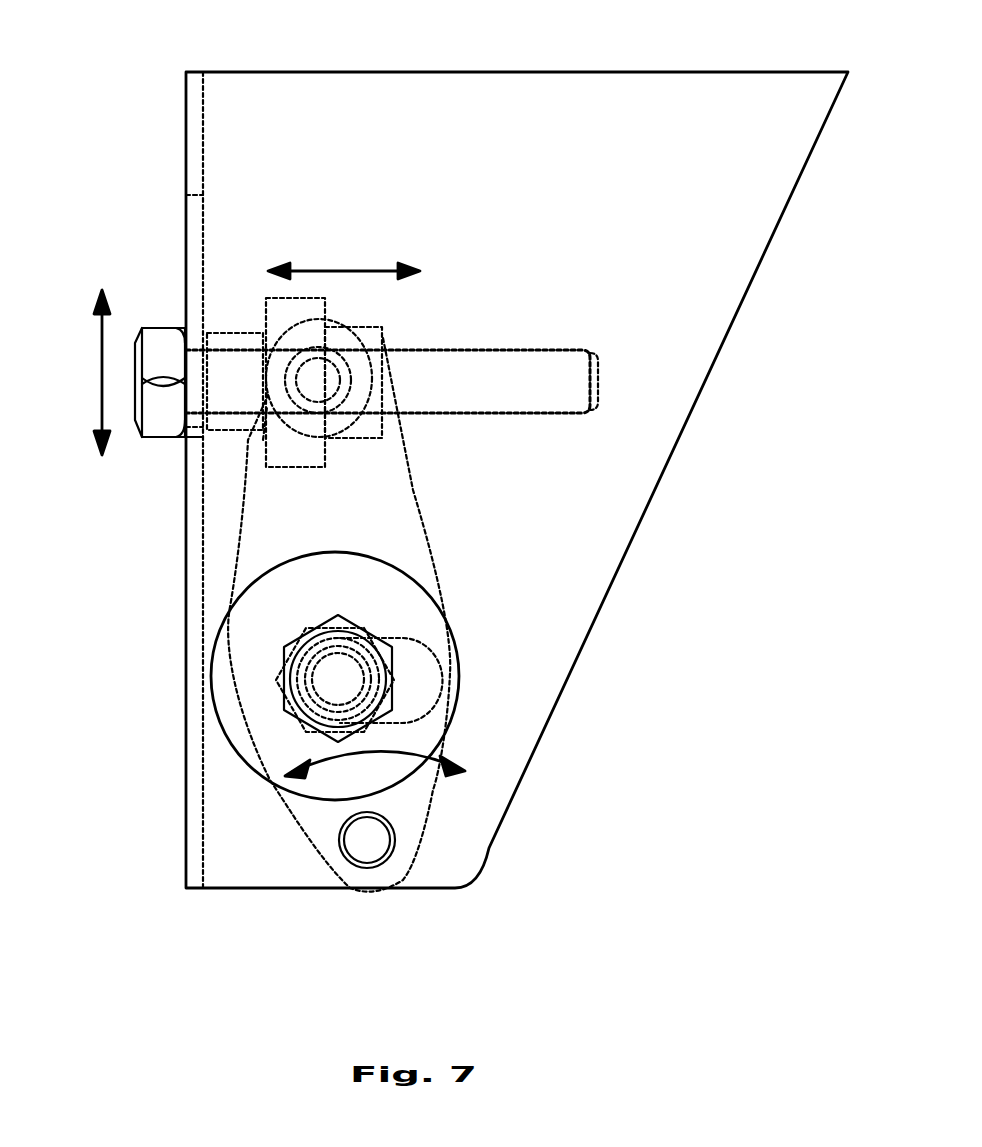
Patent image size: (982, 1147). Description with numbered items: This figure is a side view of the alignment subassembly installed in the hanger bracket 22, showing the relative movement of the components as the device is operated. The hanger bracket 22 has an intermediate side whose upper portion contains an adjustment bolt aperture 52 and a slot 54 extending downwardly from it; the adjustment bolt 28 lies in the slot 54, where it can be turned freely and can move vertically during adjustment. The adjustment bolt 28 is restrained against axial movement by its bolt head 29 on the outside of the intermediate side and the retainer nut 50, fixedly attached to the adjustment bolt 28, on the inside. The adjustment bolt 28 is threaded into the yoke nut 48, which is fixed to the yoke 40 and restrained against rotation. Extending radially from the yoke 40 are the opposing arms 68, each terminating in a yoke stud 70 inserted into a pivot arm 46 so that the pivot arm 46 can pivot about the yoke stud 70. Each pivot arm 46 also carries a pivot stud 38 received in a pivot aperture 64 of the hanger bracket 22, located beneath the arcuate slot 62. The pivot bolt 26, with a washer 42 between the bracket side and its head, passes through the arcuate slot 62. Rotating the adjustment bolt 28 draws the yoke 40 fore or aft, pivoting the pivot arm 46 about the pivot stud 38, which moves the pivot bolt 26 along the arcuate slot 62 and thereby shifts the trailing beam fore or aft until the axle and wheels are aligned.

The hanger bracket 22 is at (485, 115).
The pivot bolt 26 is at (382, 668).
The adjustment bolt 28 is at (560, 369).
The bolt head 29 is at (160, 400).
The pivot stud 38 is at (370, 841).
The yoke 40 is at (267, 308).
The washer 42 is at (408, 613).
The pivot arm 46 is at (383, 520).
The yoke nut 48 is at (377, 328).
The retainer nut 50 is at (230, 364).
The adjustment bolt aperture 52 is at (192, 220).
The slot 54 is at (192, 440).
The arcuate slot 62 is at (443, 700).
The pivot aperture 64 is at (387, 820).
The arm 68 is at (193, 427).
The yoke stud 70 is at (263, 440).